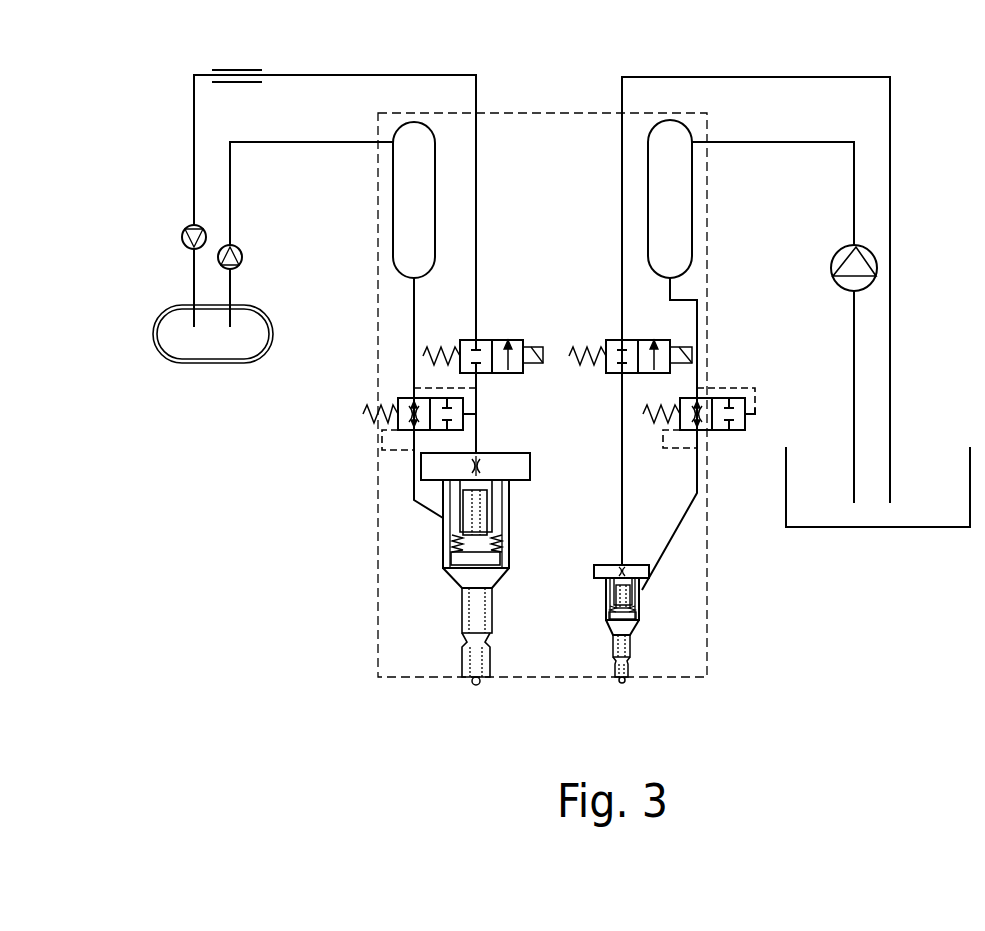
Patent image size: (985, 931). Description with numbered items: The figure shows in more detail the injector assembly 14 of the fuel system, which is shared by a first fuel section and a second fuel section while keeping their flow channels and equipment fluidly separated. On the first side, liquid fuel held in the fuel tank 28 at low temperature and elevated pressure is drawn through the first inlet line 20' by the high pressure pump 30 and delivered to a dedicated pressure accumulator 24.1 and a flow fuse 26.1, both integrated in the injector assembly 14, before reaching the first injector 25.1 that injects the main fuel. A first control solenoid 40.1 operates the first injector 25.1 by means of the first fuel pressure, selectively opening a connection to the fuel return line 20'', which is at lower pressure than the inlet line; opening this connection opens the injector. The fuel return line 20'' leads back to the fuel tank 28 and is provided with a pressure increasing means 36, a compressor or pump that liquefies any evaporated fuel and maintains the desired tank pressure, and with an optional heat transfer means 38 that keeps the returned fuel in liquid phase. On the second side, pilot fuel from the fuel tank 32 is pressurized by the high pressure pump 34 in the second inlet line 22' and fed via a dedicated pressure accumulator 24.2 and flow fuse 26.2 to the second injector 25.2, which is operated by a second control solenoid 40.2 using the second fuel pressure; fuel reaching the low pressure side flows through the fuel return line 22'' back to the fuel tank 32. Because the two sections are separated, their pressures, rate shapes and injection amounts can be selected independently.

The injector assembly 14 is at (673, 632).
The first inlet line 20' is at (311, 220).
The fuel return line 20'' is at (335, 192).
The second inlet line 22' is at (773, 308).
The fuel return line 22'' is at (756, 305).
The pressure accumulator 24.1 is at (412, 189).
The pressure accumulator 24.2 is at (668, 192).
The first injector 25.1 is at (471, 668).
The second injector 25.2 is at (633, 665).
The flow fuse 26.1 is at (363, 422).
The flow fuse 26.2 is at (730, 408).
The fuel tank 28 is at (236, 337).
The high pressure pump 30 is at (234, 260).
The fuel tank 32 is at (808, 500).
The high pressure pump 34 is at (860, 268).
The pressure increasing means 36 is at (191, 233).
The heat transfer means 38 is at (234, 69).
The first control solenoid 40.1 is at (496, 338).
The second control solenoid 40.2 is at (614, 338).